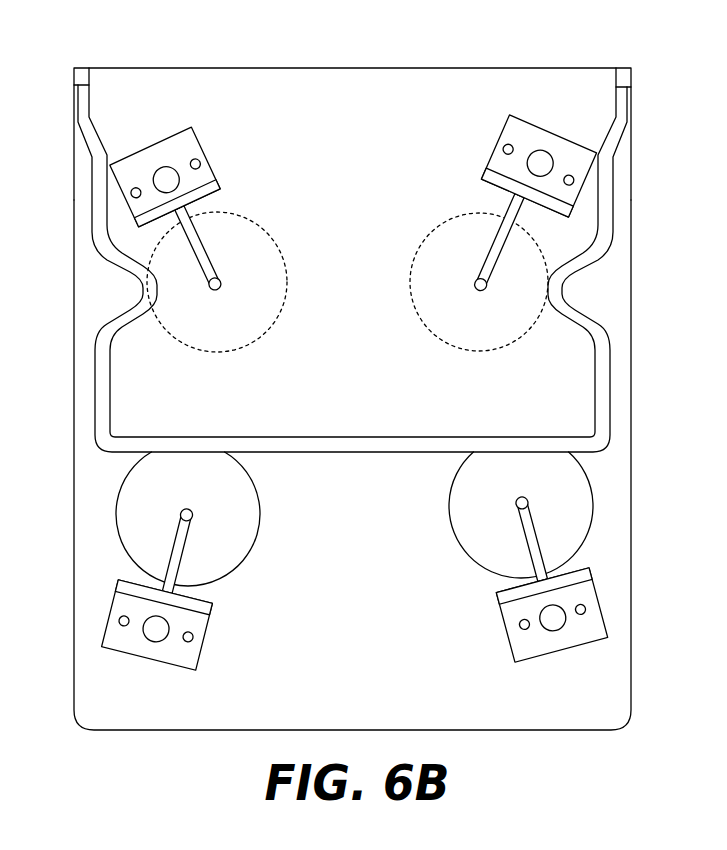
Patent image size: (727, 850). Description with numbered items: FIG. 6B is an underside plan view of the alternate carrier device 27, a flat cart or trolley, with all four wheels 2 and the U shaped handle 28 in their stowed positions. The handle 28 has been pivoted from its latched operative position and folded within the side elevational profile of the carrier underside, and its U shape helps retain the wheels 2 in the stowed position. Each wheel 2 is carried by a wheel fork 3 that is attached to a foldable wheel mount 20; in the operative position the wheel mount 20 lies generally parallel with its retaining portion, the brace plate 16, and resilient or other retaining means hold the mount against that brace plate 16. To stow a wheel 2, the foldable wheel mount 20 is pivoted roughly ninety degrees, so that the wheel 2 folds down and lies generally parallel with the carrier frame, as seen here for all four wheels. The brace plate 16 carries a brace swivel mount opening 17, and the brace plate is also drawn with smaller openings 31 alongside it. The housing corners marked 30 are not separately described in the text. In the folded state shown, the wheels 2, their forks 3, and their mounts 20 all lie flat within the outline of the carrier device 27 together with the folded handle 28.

The wheel 2 is at (283, 306).
The wheel fork 3 is at (218, 258).
The brace plate 16 is at (180, 658).
The brace swivel mount opening 17 is at (158, 176).
The foldable wheel mount 20 is at (226, 188).
The alternate carrier device B 27 is at (128, 731).
The U shaped handle 28 is at (295, 445).
The housing top corner 30 is at (74, 70).
The small mounting hole 31 is at (192, 151).